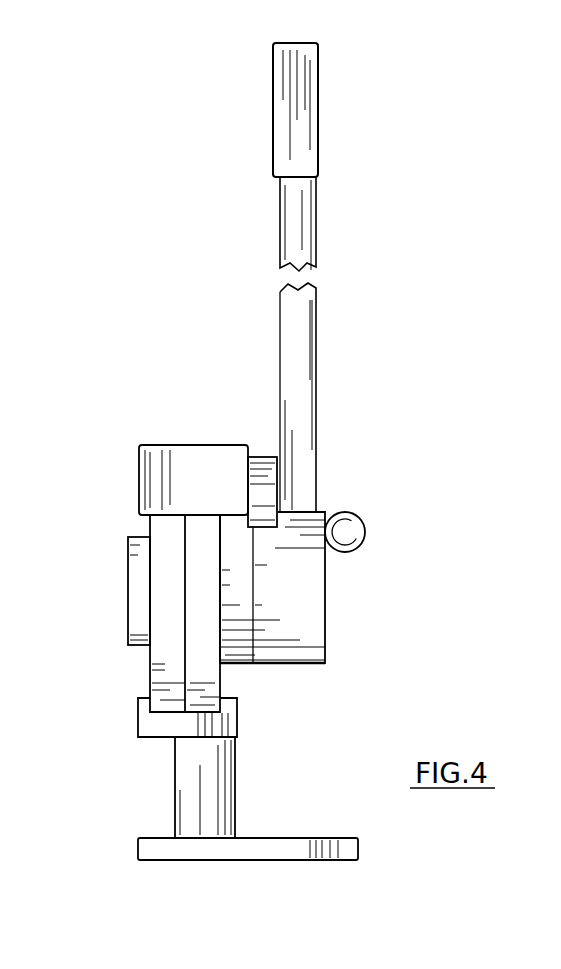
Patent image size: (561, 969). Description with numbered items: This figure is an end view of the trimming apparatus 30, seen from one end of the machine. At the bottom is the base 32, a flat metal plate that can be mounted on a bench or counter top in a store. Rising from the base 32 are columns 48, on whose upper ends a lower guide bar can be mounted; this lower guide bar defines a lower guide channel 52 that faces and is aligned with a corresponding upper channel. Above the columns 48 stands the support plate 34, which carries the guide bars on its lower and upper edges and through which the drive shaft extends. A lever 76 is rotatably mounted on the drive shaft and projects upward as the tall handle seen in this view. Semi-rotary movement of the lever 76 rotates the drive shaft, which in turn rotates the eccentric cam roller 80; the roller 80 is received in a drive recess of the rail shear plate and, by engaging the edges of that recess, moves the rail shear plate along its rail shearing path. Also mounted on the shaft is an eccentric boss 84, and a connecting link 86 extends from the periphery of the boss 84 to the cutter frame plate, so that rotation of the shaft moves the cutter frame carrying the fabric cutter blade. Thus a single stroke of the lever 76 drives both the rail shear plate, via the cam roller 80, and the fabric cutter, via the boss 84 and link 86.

The trimming apparatus 30 is at (165, 424).
The base 32 is at (277, 860).
The support plate 34 is at (203, 674).
The columns 48 is at (187, 787).
The lower guide channel 52 is at (140, 720).
The lever 76 is at (307, 224).
The eccentric cam roller 80 is at (138, 592).
The eccentric boss 84 is at (303, 586).
The connecting link 86 is at (263, 472).